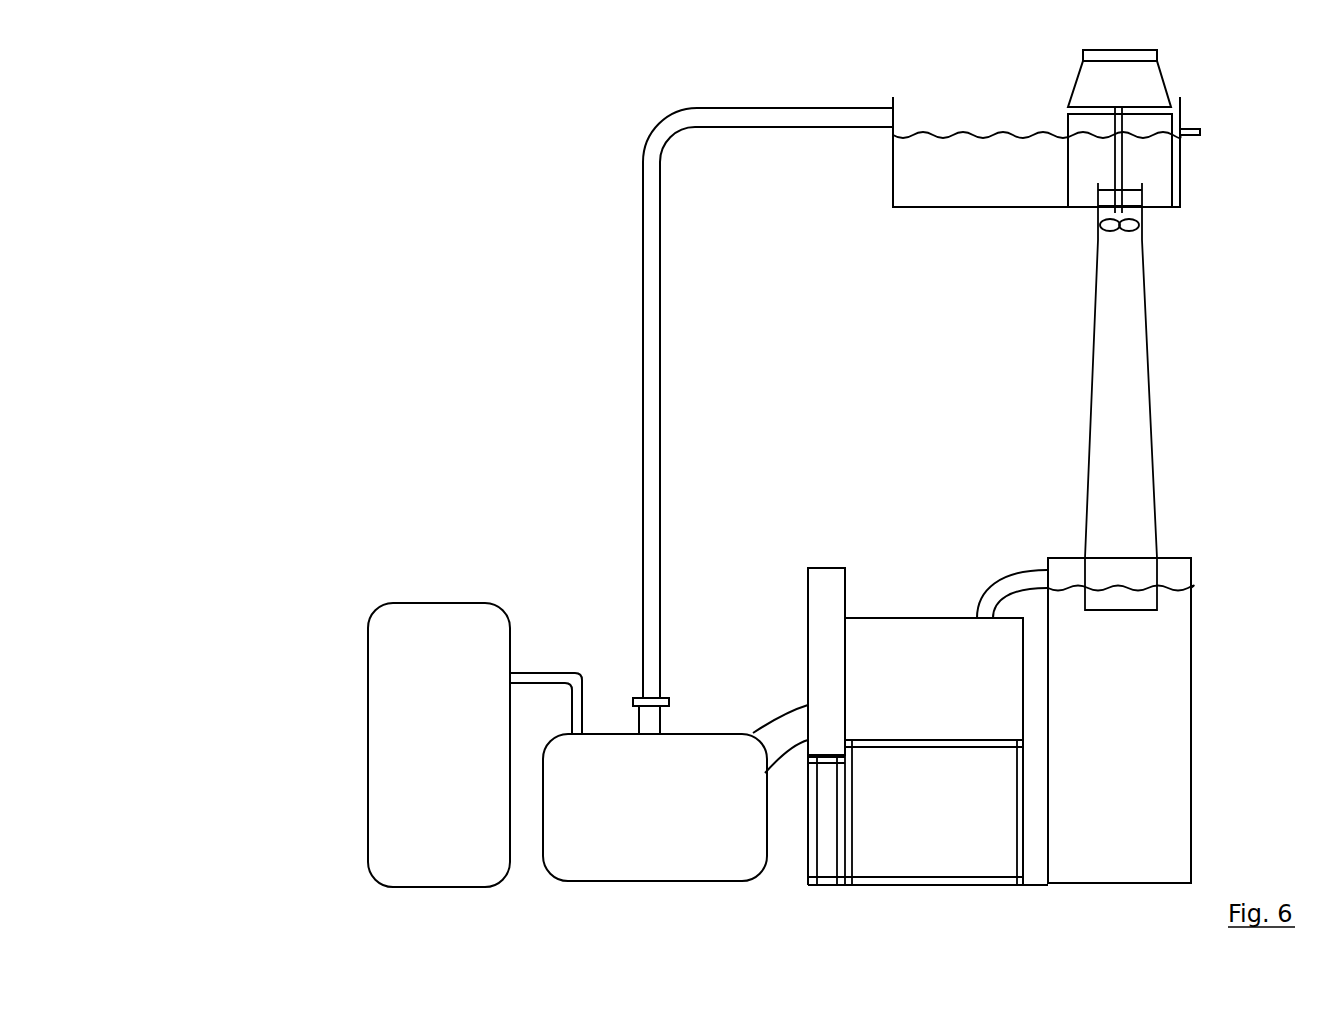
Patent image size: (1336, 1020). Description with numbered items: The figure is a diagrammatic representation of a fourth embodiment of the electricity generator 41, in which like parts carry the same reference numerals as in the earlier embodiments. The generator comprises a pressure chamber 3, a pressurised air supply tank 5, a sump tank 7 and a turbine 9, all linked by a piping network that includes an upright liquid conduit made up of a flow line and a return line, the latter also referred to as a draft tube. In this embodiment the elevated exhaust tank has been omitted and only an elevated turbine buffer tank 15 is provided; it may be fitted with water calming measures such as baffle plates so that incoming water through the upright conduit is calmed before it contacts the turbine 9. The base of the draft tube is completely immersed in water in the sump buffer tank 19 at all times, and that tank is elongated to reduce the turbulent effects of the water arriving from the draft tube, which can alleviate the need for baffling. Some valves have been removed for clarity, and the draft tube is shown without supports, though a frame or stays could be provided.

The electricity generator 41 is at (383, 230).
The pressure chamber 3 is at (603, 868).
The pressurised air supply tank 5 is at (405, 727).
The sump tank 7 is at (908, 715).
The turbine 9 is at (1152, 71).
The elevated turbine buffer tank 15 is at (1178, 152).
The sump buffer tank 19 is at (1153, 702).